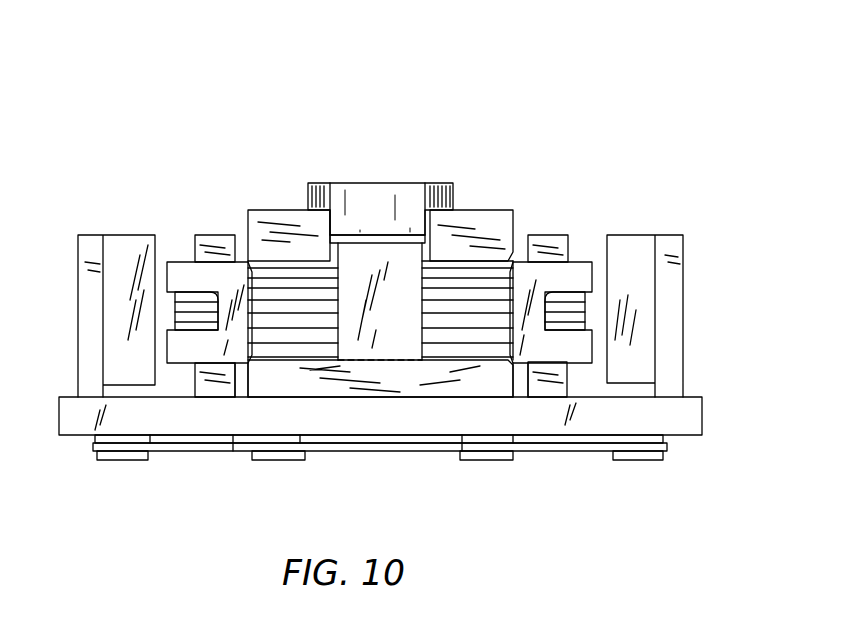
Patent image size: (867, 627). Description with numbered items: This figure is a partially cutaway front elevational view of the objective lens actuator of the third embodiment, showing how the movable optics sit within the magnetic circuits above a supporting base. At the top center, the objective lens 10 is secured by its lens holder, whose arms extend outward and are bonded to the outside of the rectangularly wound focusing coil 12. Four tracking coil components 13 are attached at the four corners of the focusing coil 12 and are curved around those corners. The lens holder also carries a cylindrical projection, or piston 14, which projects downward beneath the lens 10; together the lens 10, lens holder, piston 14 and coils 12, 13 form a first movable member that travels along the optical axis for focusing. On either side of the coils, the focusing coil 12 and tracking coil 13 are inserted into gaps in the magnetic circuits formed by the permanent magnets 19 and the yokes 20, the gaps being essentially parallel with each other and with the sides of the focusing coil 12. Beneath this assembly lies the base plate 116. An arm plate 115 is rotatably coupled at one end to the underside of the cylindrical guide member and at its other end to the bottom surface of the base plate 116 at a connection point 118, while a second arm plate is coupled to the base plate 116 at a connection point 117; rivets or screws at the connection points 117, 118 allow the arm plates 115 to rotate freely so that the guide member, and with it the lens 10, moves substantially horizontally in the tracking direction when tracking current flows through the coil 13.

The objective lens 10 is at (380, 183).
The focusing coil 12 is at (490, 265).
The tracking coil 13 is at (185, 272).
The piston 14 is at (483, 215).
The permanent magnet 19 is at (625, 248).
The yoke 20 is at (546, 388).
The arm plate 115 is at (400, 450).
The base plate 116 is at (690, 413).
The connection point 117 is at (127, 460).
The connection point 118 is at (633, 460).